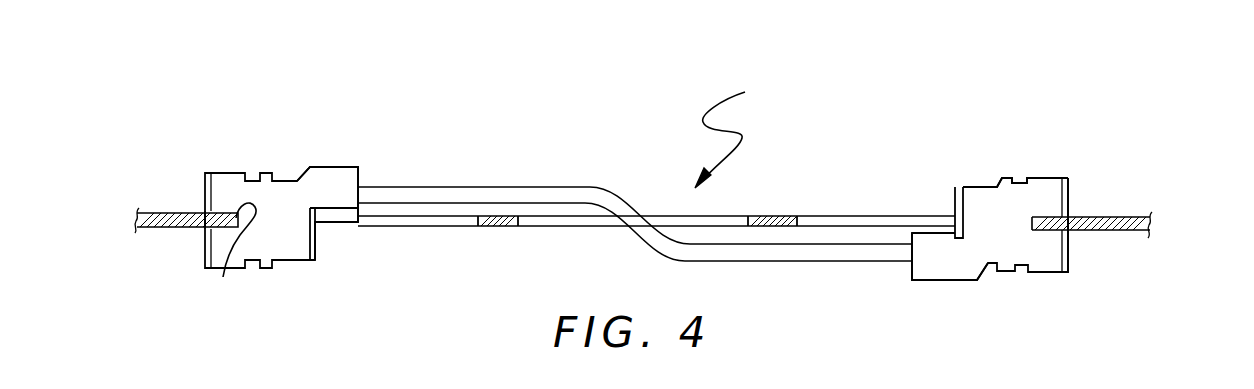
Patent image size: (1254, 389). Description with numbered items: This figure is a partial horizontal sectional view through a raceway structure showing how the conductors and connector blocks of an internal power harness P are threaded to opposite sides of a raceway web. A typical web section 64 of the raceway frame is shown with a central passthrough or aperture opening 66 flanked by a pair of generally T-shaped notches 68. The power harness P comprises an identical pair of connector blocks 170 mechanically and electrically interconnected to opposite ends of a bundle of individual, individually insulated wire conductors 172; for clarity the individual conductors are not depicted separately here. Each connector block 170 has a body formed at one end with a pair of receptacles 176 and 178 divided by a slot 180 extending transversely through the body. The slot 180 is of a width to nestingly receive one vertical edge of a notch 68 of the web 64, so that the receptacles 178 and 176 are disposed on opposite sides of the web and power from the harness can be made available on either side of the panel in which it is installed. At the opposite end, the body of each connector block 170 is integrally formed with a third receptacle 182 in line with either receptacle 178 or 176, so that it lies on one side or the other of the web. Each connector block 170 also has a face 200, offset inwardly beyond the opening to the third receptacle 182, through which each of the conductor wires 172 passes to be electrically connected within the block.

The web section 64 is at (1150, 223).
The passthrough or aperture opening 66 is at (577, 223).
The T-shaped notch 68 is at (447, 220).
The connector block 170 is at (970, 187).
The wire conductors 172 is at (556, 186).
The receptacle 176 is at (205, 247).
The receptacle 178 is at (205, 193).
The slot 180 is at (250, 251).
The third receptacle 182 is at (315, 246).
The face 200 is at (360, 177).
The power harness P is at (733, 130).